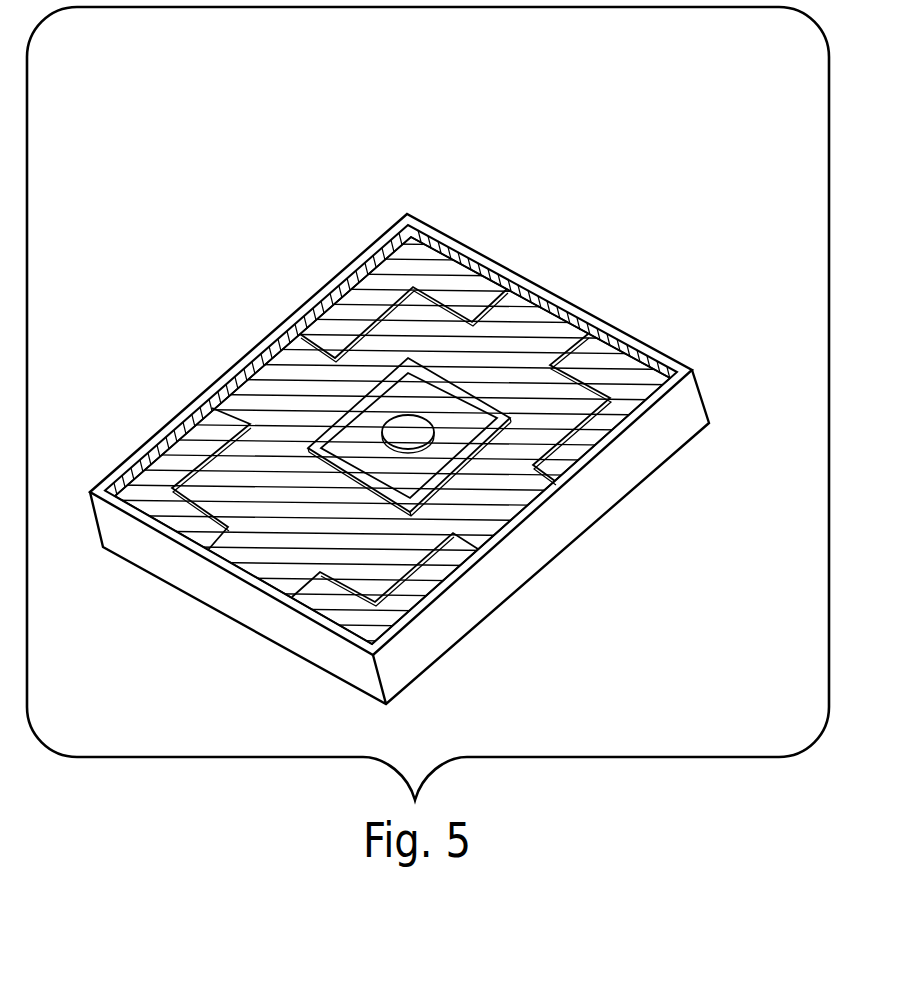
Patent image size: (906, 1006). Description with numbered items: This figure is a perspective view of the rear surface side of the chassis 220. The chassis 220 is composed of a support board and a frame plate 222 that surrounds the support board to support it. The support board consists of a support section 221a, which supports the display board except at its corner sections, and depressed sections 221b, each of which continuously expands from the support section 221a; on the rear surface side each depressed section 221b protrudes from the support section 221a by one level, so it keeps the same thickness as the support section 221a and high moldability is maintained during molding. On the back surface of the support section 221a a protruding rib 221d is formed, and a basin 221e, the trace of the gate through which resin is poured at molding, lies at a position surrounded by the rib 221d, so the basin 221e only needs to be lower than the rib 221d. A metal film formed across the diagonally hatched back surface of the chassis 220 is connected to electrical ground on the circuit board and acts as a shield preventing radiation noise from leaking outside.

The chassis 220 is at (507, 106).
The support section 221a is at (284, 372).
The depressed section 221b is at (395, 275).
The protruding rib 221d is at (465, 393).
The basin 221e is at (408, 432).
The frame plate 222 is at (687, 408).